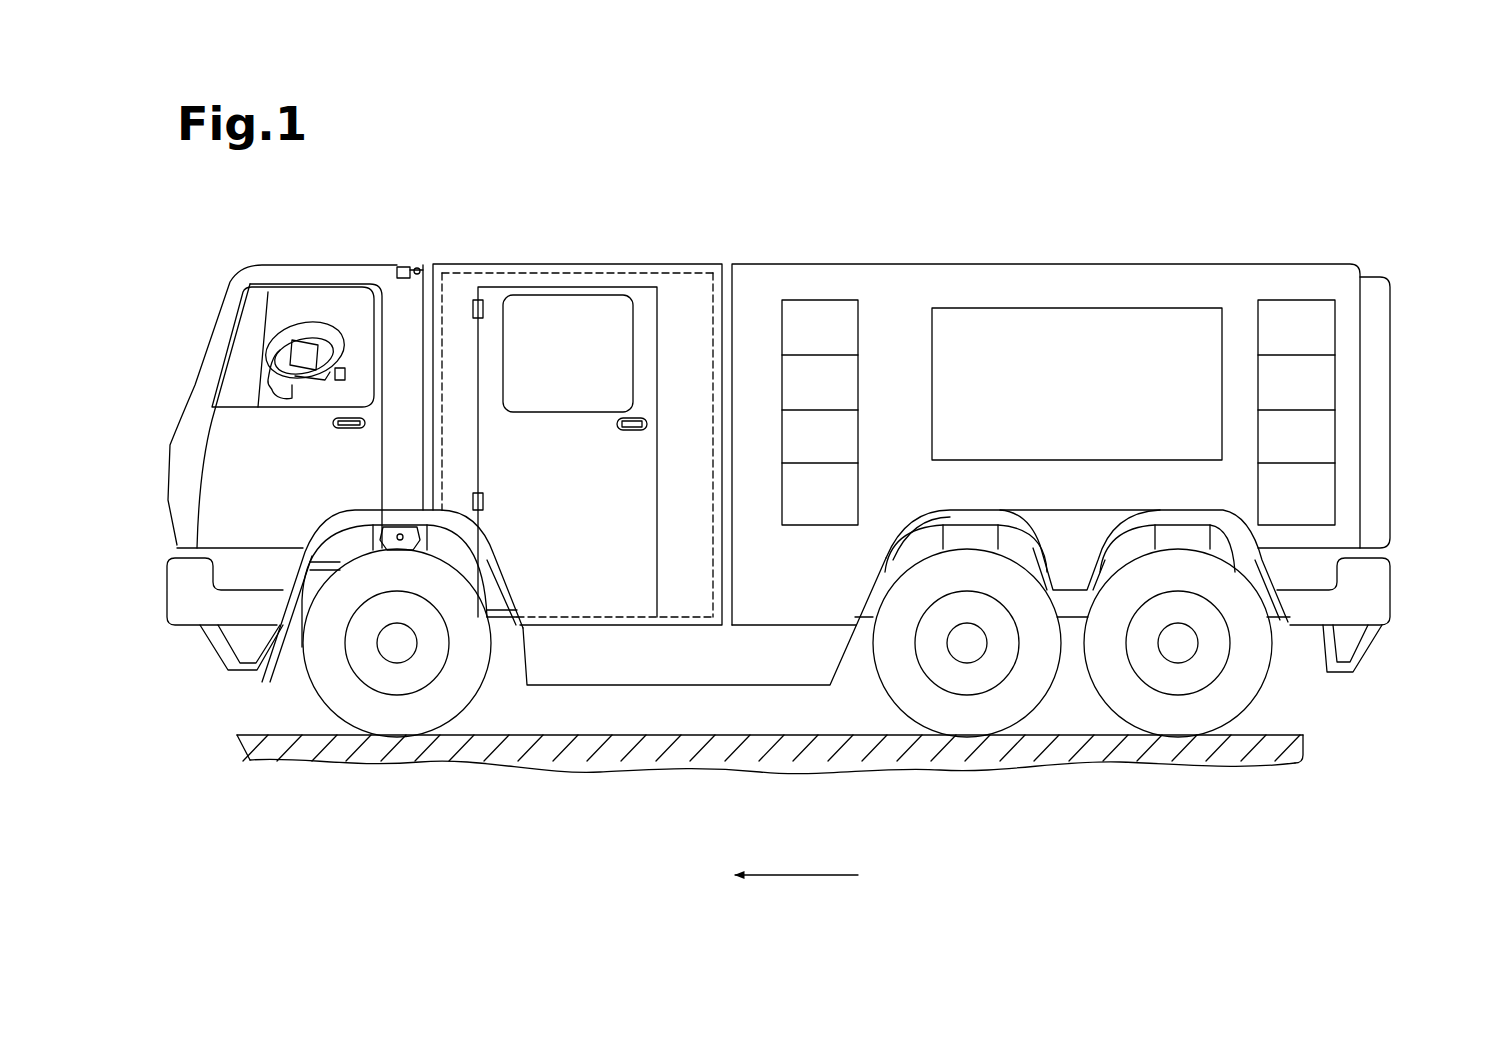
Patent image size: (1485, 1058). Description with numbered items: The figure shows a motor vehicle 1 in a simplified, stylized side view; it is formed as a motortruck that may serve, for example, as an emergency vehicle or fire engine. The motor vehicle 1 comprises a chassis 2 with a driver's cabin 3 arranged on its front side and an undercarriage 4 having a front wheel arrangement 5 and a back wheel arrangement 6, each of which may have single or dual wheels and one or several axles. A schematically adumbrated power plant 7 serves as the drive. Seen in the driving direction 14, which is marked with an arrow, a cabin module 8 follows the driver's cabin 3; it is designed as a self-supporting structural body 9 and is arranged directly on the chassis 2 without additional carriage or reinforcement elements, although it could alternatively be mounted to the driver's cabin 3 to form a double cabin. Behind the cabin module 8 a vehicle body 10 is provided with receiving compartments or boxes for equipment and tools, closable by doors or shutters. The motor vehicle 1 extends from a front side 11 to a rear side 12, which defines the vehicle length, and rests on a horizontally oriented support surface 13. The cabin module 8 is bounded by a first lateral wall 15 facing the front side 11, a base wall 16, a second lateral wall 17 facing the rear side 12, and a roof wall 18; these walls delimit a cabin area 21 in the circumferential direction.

The motor vehicle 1 is at (1283, 126).
The chassis 2 is at (337, 552).
The driver's cabin 3 is at (340, 233).
The undercarriage 4 is at (1285, 695).
The front wheel arrangement 5 is at (305, 715).
The back wheel arrangement 6 is at (1245, 725).
The power plant 7 is at (340, 550).
The cabin module 8 is at (593, 230).
The self-supporting structural body 9 is at (685, 262).
The vehicle body 10 is at (1043, 228).
The front side 11 is at (165, 285).
The rear side 12 is at (1410, 345).
The support surface 13 is at (606, 737).
The driving direction 14 is at (798, 873).
The first lateral wall 15 is at (440, 315).
The base wall 16 is at (613, 620).
The second lateral wall 17 is at (718, 352).
The roof wall 18 is at (563, 266).
The cabin area 21 is at (667, 575).